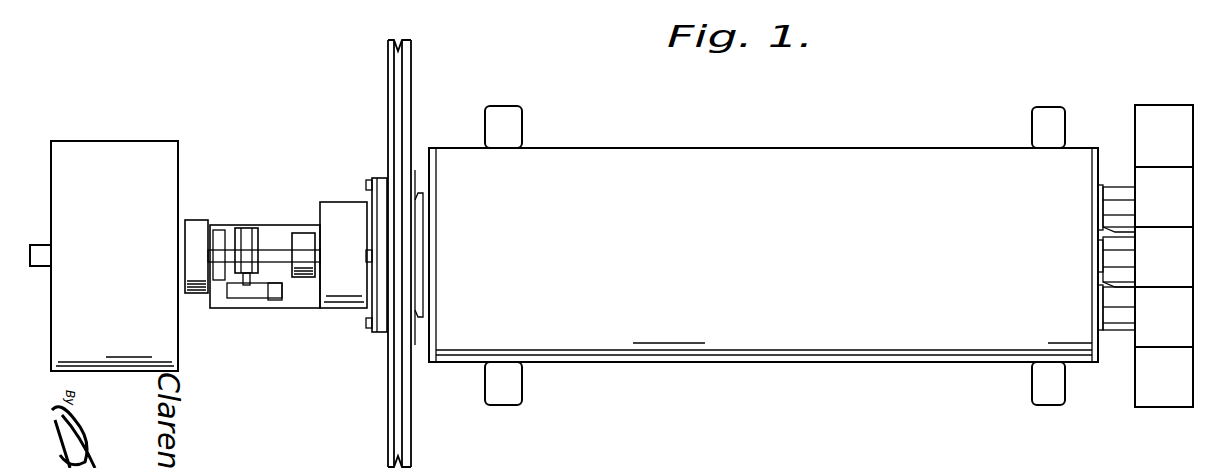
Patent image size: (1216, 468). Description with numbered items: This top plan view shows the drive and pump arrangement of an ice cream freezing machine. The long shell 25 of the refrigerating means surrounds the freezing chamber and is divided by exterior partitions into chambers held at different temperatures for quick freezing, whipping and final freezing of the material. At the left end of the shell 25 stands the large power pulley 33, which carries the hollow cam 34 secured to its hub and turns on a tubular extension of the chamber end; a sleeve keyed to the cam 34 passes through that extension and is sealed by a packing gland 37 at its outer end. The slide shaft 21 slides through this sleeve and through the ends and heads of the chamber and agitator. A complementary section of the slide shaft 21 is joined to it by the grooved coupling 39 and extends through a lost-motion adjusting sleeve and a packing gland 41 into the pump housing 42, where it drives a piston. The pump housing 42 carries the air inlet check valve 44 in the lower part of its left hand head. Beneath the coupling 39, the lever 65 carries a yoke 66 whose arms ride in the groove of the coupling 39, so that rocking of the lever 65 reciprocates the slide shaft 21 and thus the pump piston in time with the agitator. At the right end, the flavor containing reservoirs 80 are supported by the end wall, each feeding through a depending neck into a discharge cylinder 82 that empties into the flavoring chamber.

The slide shaft 21 is at (265, 250).
The shell 25 is at (757, 146).
The power pulley 33 is at (412, 90).
The hollow cam 34 is at (342, 208).
The packing gland 37 is at (298, 233).
The grooved coupling 39 is at (257, 226).
The packing gland 41 is at (195, 222).
The pump housing 42 is at (176, 163).
The air inlet check valve 44 is at (40, 245).
The lever 65 is at (255, 298).
The yoke 66 is at (246, 283).
The flavor containing reservoirs 80 is at (1143, 112).
The discharge cylinder 82 is at (1118, 318).